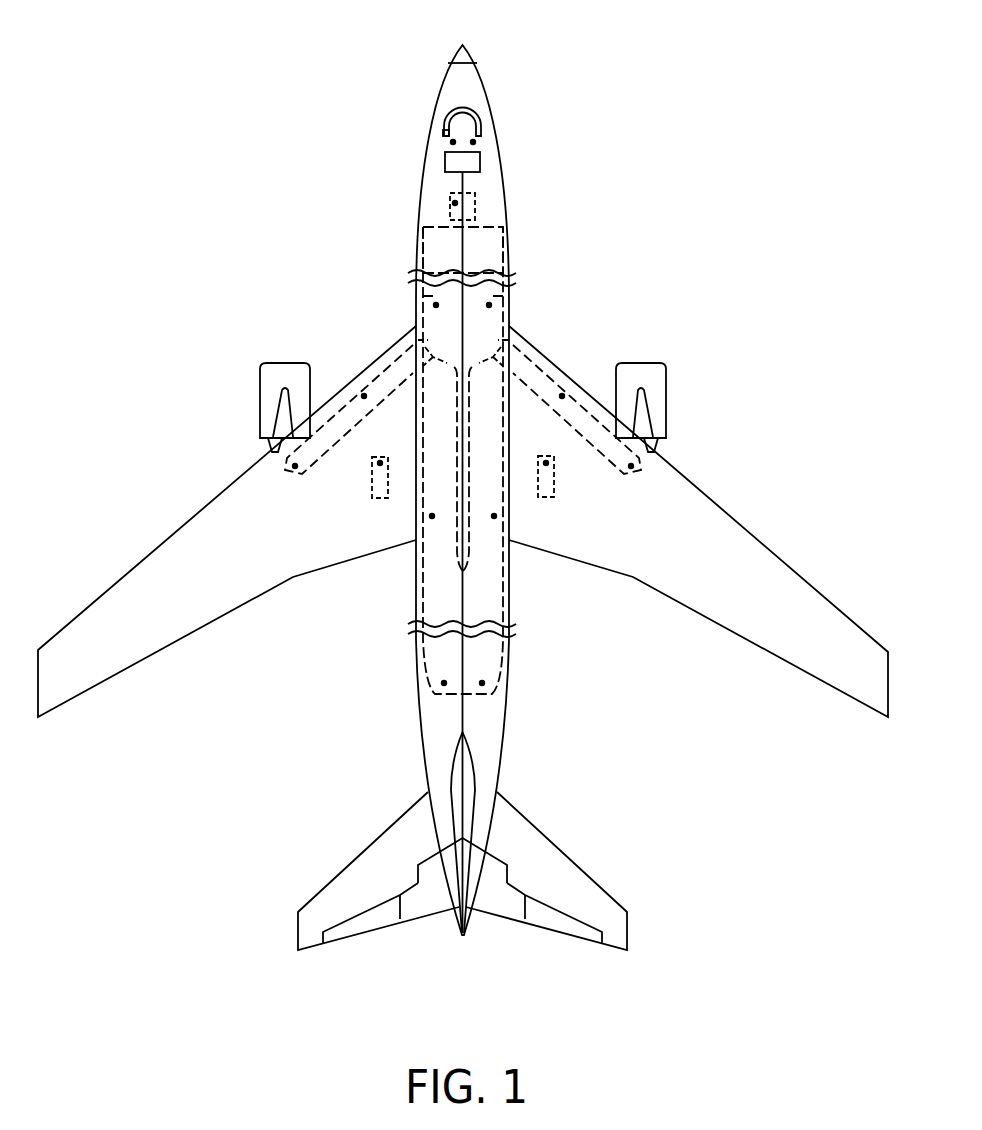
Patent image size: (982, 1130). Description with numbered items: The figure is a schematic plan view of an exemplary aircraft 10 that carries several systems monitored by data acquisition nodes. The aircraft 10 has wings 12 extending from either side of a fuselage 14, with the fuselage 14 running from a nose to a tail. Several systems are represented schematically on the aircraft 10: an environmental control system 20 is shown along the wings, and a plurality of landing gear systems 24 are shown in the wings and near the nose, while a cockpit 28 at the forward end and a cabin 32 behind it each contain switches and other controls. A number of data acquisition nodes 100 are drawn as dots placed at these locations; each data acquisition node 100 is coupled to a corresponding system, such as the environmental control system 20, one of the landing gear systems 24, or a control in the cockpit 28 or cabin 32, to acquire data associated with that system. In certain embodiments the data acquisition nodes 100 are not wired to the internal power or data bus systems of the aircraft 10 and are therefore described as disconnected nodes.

The aircraft 10 is at (268, 88).
The wing 12 is at (188, 528).
The fuselage 14 is at (417, 665).
The environmental control system 20 is at (530, 360).
The landing gear system 24 is at (480, 195).
The cockpit 28 is at (472, 112).
The cabin 32 is at (503, 237).
The data acquisition node 100 is at (473, 142).